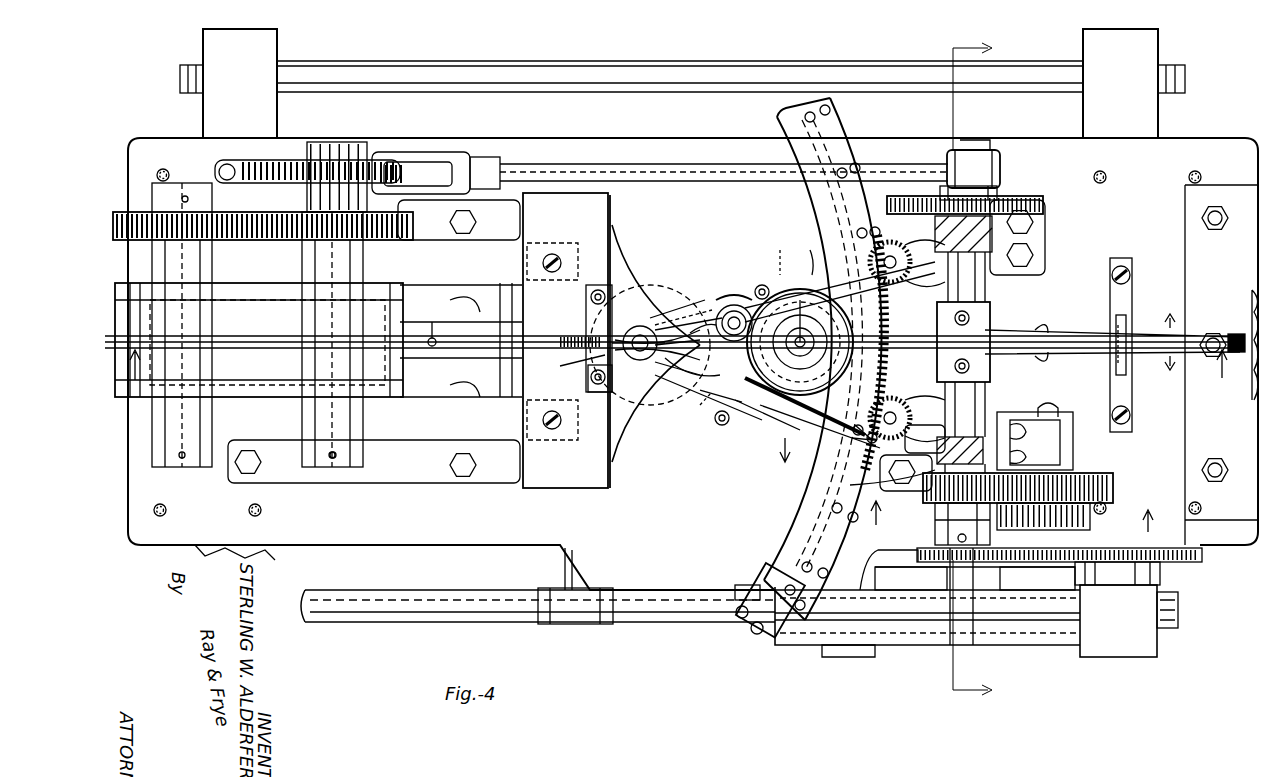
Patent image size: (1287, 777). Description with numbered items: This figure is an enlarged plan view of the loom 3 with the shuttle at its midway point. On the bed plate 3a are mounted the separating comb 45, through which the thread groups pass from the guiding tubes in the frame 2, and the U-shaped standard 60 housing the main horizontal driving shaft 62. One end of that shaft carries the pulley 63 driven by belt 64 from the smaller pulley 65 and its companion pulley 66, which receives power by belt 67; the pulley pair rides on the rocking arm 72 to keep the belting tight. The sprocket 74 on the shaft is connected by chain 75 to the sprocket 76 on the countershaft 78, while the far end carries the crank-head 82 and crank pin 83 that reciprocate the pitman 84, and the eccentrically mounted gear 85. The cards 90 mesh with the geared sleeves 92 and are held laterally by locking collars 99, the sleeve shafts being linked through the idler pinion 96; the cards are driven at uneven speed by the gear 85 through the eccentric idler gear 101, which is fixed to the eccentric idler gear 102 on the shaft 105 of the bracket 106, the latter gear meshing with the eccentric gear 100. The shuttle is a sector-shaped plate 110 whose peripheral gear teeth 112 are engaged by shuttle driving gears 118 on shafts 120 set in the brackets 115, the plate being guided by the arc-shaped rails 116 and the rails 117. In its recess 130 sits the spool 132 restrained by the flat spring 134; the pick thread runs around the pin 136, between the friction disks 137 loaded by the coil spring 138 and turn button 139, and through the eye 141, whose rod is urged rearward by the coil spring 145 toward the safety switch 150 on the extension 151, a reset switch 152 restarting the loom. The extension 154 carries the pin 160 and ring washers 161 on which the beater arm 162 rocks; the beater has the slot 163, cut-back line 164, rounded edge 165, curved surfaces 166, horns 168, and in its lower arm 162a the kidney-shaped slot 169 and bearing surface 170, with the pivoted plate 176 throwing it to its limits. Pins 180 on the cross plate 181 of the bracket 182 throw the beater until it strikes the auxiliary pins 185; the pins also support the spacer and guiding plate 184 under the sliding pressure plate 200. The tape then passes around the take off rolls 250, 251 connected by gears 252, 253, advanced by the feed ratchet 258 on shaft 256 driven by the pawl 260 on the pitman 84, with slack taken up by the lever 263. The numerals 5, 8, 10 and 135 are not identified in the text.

The frame 2 is at (1250, 330).
The loom 3 is at (1160, 120).
The bed plate 3a is at (1222, 152).
The shaft end 5 is at (678, 373).
The section line 8 is at (966, 369).
The direction arrow 10 is at (1017, 513).
The separating comb 45 is at (1130, 322).
The U-shaped standard 60 is at (994, 243).
The main horizontal driving shaft 62 is at (975, 578).
The pulley 63 is at (1075, 648).
The belt 64 is at (940, 645).
The smaller pulley 65 is at (762, 636).
The companion pulley 66 is at (742, 586).
The belt 67 is at (690, 612).
The rocking arm 72 is at (900, 568).
The sprocket 74 is at (889, 560).
The chain 75 is at (1035, 568).
The sprocket 76 is at (1202, 568).
The countershaft 78 is at (1160, 590).
The crank-head 82 is at (998, 192).
The crank pin 83 is at (1002, 165).
The pitman 84 is at (728, 170).
The eccentrically mounted gear 85 is at (875, 483).
The cards 90 is at (1054, 340).
The sleeves 92 is at (985, 400).
The idler pinion 96 is at (1045, 207).
The locking collars 99 is at (935, 320).
The eccentric gear 100 is at (925, 440).
The eccentric idler gear 101 is at (1090, 516).
The eccentric idler gear 102 is at (1100, 470).
The shaft 105 is at (1055, 408).
The bracket 106 is at (1073, 445).
The sector-shaped plate 110 is at (765, 410).
The gear teeth 112 is at (900, 282).
The bracket 115 is at (915, 300).
The arc-shaped rails 116 is at (805, 190).
The rail 117 is at (860, 134).
The shuttle driving gear 118 is at (865, 300).
The shaft 120 is at (855, 260).
The recess 130 is at (812, 300).
The spool 132 is at (780, 402).
The flat spring 134 is at (795, 296).
The wheel 135 is at (800, 342).
The pin 136 is at (742, 310).
The friction disks 137 is at (730, 305).
The coil spring 138 is at (728, 296).
The turn button 139 is at (728, 320).
The eye 141 is at (745, 402).
The coil spring 145 is at (771, 450).
The safety switch 150 is at (770, 568).
The extension 151 is at (792, 580).
The reset switch 152 is at (742, 620).
The extension 154 is at (675, 365).
The pin 160 is at (680, 388).
The ring washers 161 is at (670, 372).
The beater arm 162 is at (648, 300).
The lower arm 162a is at (718, 398).
The slot 163 is at (672, 296).
The line 164 is at (680, 305).
The rounded edge 165 is at (588, 375).
The curved surfaces 166 is at (640, 290).
The horns 168 is at (618, 240).
The kidney-shaped slot 169 is at (676, 335).
The surface 170 is at (620, 352).
The pivoted plate 176 is at (698, 320).
The pin 180 is at (598, 290).
The cross plate 181 is at (598, 488).
The bracket 182 is at (506, 250).
The spacer and guiding plate 184 is at (570, 361).
The auxiliary pins 185 is at (628, 268).
The sliding pressure plate 200 is at (580, 318).
The take off roll 250 is at (395, 374).
The take off roll 251 is at (228, 300).
The gear 252 is at (385, 242).
The gear 253 is at (222, 242).
The shaft 256 is at (318, 142).
The feed ratchet 258 is at (283, 165).
The pawl 260 is at (397, 165).
The lever 263 is at (437, 393).